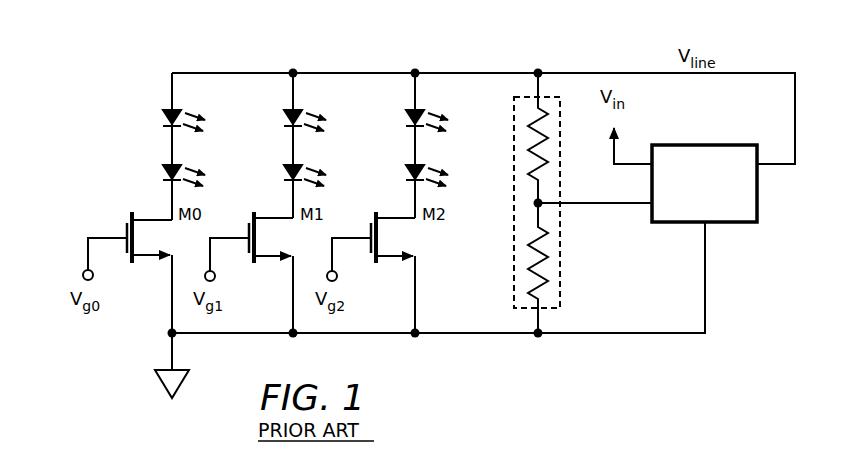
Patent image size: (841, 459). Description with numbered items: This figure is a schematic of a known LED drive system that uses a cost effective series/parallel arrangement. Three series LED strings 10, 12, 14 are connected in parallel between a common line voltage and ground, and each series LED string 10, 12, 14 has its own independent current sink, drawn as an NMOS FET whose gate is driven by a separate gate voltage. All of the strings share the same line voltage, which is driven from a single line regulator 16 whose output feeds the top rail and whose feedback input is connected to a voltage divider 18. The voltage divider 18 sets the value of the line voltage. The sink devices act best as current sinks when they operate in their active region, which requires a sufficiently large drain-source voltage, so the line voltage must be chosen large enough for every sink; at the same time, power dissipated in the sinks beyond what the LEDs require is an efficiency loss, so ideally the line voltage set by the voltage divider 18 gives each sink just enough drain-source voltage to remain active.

The series LED string 10 is at (153, 148).
The series LED string 12 is at (274, 148).
The series LED string 14 is at (396, 148).
The line regulator 16 is at (717, 222).
The voltage divider 18 is at (513, 127).